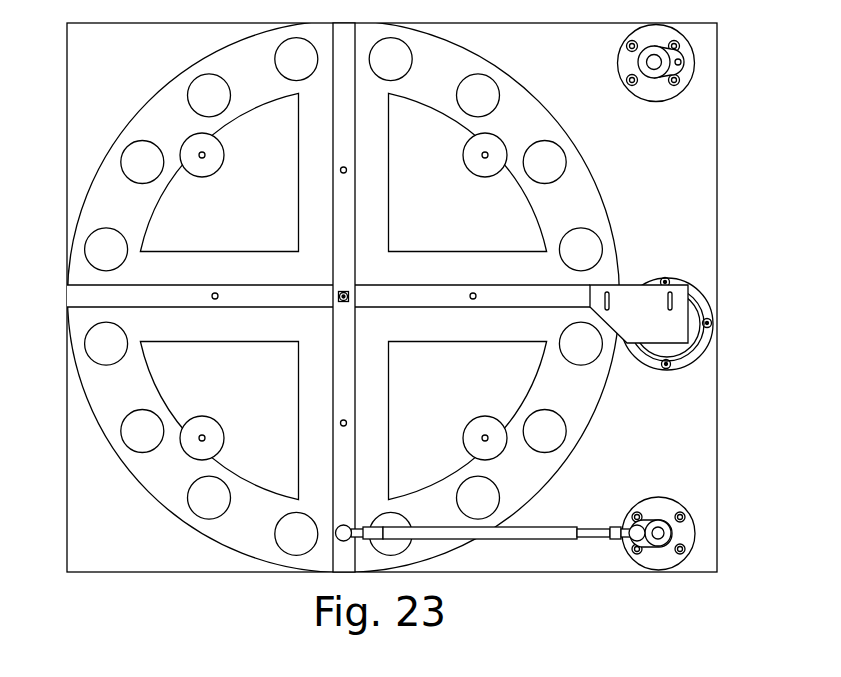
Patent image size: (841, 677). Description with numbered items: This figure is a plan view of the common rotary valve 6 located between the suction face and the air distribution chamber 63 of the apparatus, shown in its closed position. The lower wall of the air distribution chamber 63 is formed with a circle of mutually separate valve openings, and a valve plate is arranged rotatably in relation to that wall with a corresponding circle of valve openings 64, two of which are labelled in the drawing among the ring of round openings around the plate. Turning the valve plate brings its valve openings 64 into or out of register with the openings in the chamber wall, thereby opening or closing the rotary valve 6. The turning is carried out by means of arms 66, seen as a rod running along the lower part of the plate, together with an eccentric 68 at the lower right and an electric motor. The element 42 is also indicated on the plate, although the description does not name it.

The rotary valve 6 is at (366, 297).
The base plate 42 is at (578, 207).
The air distribution chamber 63 is at (718, 197).
The valve openings 64 is at (534, 170).
The arms 66 is at (547, 530).
The eccentric 68 is at (657, 516).